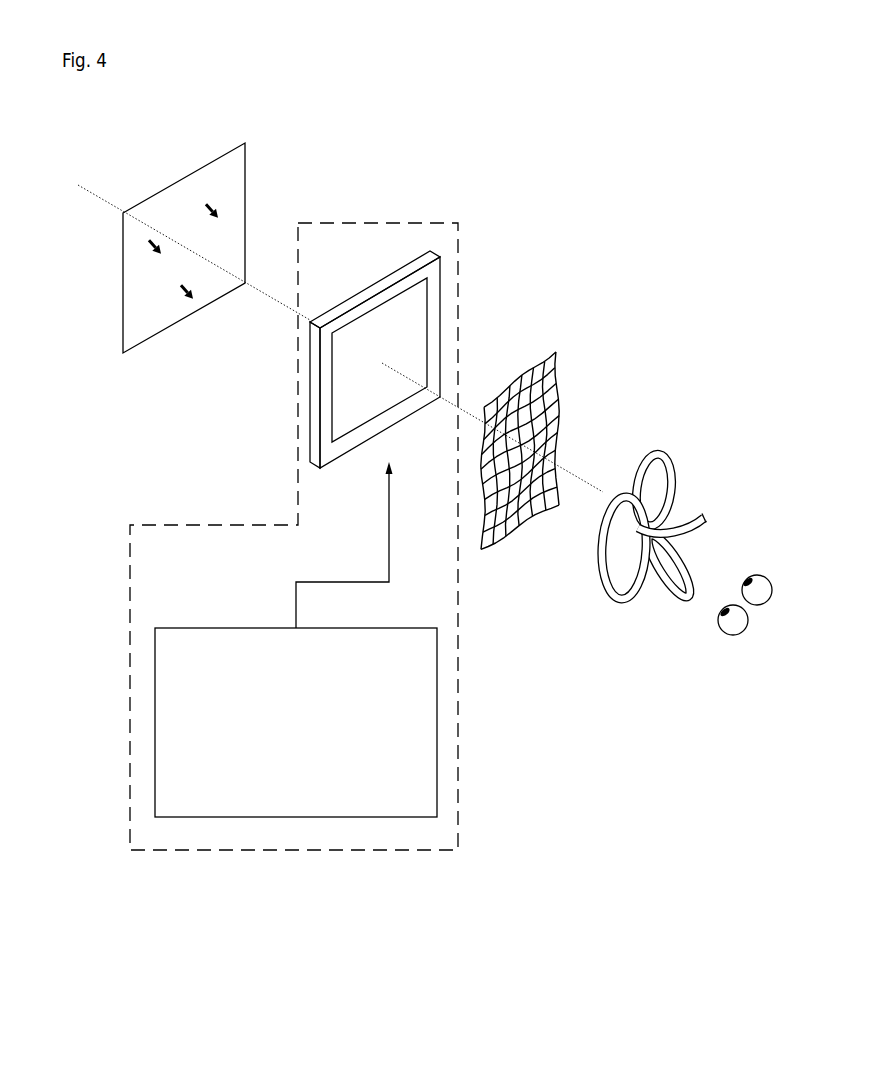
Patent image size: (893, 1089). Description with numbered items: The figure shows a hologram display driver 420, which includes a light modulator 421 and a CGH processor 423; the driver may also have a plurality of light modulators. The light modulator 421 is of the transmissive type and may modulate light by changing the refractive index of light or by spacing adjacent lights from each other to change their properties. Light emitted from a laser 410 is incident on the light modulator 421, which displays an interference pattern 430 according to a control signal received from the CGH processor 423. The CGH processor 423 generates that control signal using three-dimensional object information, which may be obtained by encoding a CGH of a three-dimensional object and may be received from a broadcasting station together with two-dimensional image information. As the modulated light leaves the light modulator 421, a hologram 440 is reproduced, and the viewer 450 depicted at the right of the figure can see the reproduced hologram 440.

The laser 410 is at (247, 167).
The hologram display driver 420 is at (458, 733).
The light modulator 421 is at (440, 280).
The CGH processor 423 is at (188, 817).
The interference pattern 430 is at (560, 384).
The hologram 440 is at (677, 482).
The viewer(s) 450 is at (762, 606).